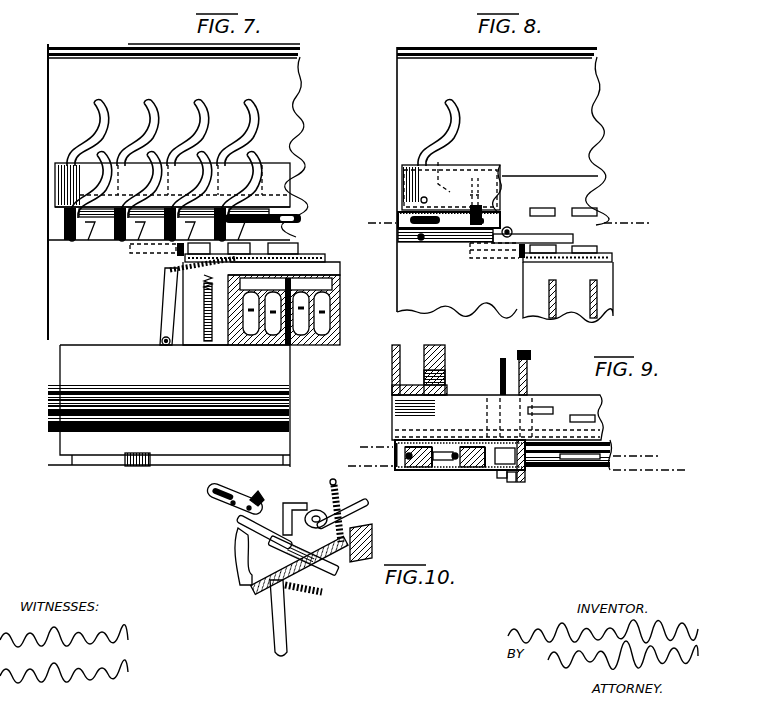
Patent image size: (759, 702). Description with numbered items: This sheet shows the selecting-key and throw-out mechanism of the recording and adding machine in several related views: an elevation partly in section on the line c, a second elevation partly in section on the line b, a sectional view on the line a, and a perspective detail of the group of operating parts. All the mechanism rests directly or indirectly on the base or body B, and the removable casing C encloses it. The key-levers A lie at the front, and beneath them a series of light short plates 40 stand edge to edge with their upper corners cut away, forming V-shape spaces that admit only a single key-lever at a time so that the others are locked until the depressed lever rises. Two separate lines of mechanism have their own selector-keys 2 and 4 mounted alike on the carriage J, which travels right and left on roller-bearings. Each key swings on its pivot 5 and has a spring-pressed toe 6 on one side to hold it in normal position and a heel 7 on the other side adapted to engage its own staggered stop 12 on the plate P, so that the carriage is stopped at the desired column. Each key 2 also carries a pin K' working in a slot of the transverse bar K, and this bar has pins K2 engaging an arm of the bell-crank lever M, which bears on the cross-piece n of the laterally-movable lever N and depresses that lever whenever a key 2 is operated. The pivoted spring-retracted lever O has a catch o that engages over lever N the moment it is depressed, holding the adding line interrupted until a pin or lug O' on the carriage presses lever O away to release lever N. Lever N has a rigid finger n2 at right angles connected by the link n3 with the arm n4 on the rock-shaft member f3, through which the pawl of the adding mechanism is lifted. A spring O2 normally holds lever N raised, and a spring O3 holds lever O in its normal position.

In FIG. 7, the removable casing C is at (48, 128).
In FIG. 9, the removable casing C is at (392, 367).
In FIG. 7, the selector-key 4 is at (250, 129).
In FIG. 8, the selector-key 4 is at (457, 133).
In FIG. 7, the selector-key 2 is at (254, 164).
In FIG. 9, the selector-key 2 is at (472, 470).
In FIG. 7, the transverse bar K is at (273, 208).
In FIG. 8, the transverse bar K is at (468, 224).
In FIG. 9, the transverse bar K is at (445, 445).
In FIG. 10, the transverse bar K is at (220, 497).
In FIG. 7, the pin K' is at (151, 200).
In FIG. 9, the pin K' is at (419, 440).
In FIG. 10, the pin K' is at (212, 508).
In FIG. 8, the pins K2 is at (474, 212).
In FIG. 9, the pins K2 is at (465, 446).
In FIG. 10, the pins K2 is at (260, 496).
In FIG. 7, the spring-pressed toe 6 is at (113, 240).
In FIG. 9, the spring-pressed toe 6 is at (403, 470).
In FIG. 7, the pivot 5 is at (72, 241).
In FIG. 8, the pivot 5 is at (421, 243).
In FIG. 7, the heel 7 is at (90, 240).
In FIG. 9, the heel 7 is at (488, 470).
In FIG. 7, the laterally-movable lever N is at (176, 251).
In FIG. 8, the laterally-movable lever N is at (523, 257).
In FIG. 9, the laterally-movable lever N is at (524, 482).
In FIG. 10, the laterally-movable lever N is at (252, 588).
In FIG. 7, the stop 12 is at (258, 255).
In FIG. 8, the stop 12 is at (602, 256).
In FIG. 9, the stop 12 is at (590, 470).
In FIG. 7, the plate P is at (330, 263).
In FIG. 8, the plate P is at (612, 267).
In FIG. 9, the plate P is at (607, 470).
In FIG. 7, the key-levers A is at (322, 280).
In FIG. 8, the key-levers A is at (600, 287).
In FIG. 7, the short plates 40 is at (325, 309).
In FIG. 7, the spring-retracted lever O is at (187, 301).
In FIG. 9, the spring-retracted lever O is at (509, 491).
In FIG. 10, the spring-retracted lever O is at (269, 618).
In FIG. 7, the spring O3 is at (196, 307).
In FIG. 10, the spring O3 is at (315, 596).
In FIG. 10, the spring O2 is at (341, 490).
In FIG. 9, the pin or lug O' is at (505, 478).
In FIG. 7, the base or body B is at (290, 413).
In FIG. 9, the base or body B is at (436, 366).
In FIG. 8, the carriage J is at (504, 178).
In FIG. 8, the bell-crank lever M is at (508, 226).
In FIG. 9, the bell-crank lever M is at (486, 440).
In FIG. 10, the bell-crank lever M is at (243, 524).
In FIG. 8, the cross-piece n is at (545, 225).
In FIG. 9, the cross-piece n is at (561, 421).
In FIG. 10, the cross-piece n is at (309, 561).
In FIG. 10, the rigid finger n2 is at (361, 534).
In FIG. 10, the link n3 is at (295, 508).
In FIG. 10, the arm n4 is at (316, 509).
In FIG. 9, the feed rod f3 is at (500, 373).
In FIG. 10, the feed rod f3 is at (368, 506).
In FIG. 10, the catch o is at (238, 569).
In FIG. 8, the section line a- a is at (510, 223).
In FIG. 9, the section line b- b is at (511, 452).
In FIG. 9, the section line c- c is at (518, 470).